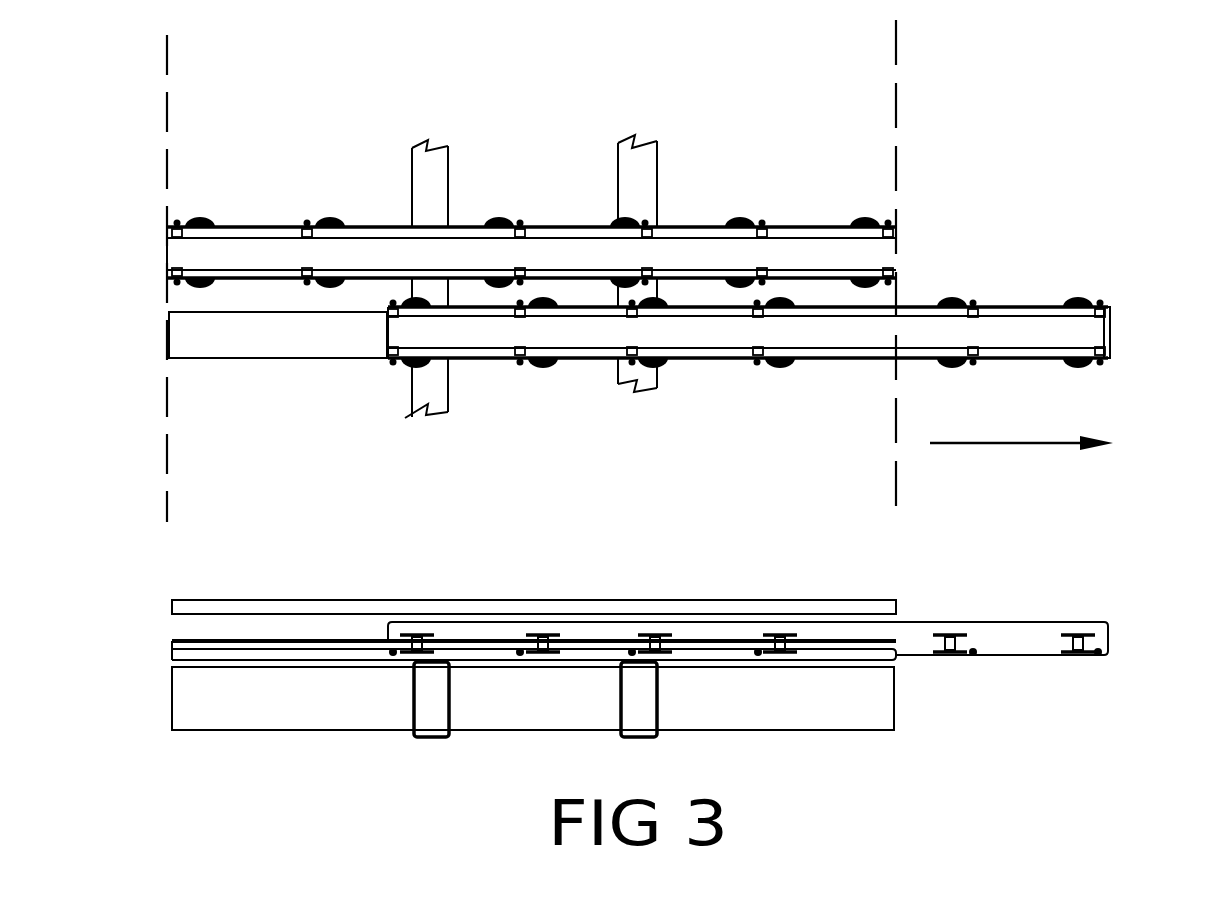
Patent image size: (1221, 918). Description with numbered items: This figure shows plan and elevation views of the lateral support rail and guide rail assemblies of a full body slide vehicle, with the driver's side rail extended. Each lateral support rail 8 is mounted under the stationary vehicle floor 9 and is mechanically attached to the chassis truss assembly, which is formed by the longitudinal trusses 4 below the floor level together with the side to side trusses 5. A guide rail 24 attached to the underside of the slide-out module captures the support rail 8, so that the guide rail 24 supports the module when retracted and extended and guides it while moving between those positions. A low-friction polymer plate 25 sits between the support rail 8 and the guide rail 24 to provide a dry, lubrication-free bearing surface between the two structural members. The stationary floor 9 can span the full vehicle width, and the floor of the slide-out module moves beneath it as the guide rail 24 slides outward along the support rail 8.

The longitudinal truss 4 is at (433, 388).
The side to side truss 5 is at (838, 703).
The lateral support rail 8 is at (188, 653).
The vehicle floor 9 is at (185, 72).
The guide rail 24 is at (808, 243).
The low-friction polymer plate 25 is at (192, 332).